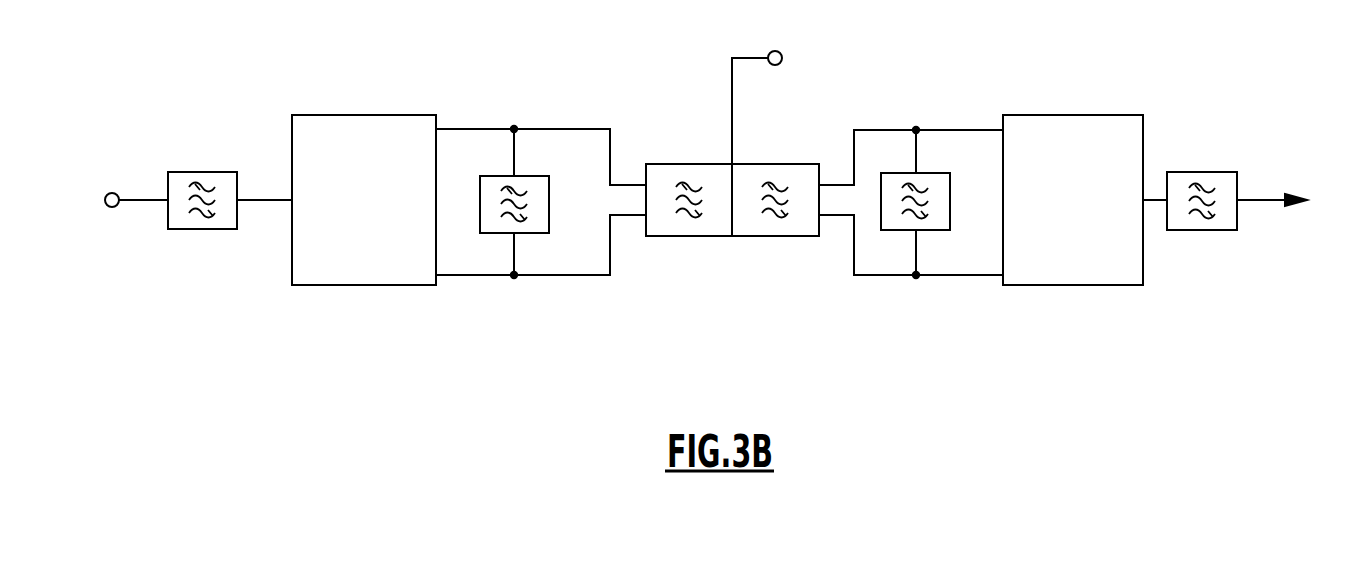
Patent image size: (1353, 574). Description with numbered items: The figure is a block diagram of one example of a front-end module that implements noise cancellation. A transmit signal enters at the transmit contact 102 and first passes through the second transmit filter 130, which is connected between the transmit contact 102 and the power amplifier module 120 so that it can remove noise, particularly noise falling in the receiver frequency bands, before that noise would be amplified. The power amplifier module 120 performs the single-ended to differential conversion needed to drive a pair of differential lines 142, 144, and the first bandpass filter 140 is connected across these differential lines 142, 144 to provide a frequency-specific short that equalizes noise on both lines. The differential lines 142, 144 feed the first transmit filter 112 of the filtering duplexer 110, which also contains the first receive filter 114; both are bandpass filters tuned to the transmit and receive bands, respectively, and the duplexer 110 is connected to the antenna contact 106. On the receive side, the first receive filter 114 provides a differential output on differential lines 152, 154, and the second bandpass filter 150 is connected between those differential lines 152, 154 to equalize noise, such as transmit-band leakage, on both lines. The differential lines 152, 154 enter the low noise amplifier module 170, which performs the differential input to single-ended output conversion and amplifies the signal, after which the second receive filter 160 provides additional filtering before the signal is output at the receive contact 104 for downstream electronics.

The transmit contact 102 is at (112, 192).
The receive contact 104 is at (1290, 193).
The antenna contact 106 is at (781, 51).
The filtering duplexer 110 is at (732, 219).
The first transmit filter 112 is at (692, 163).
The first receive filter 114 is at (758, 163).
The power amplifier module 120 is at (381, 114).
The second transmit filter 130 is at (198, 171).
The first bandpass filter 140 is at (520, 235).
The differential line 142 is at (494, 127).
The differential line 144 is at (498, 278).
The second bandpass filter 150 is at (927, 173).
The differential line 152 is at (888, 128).
The differential line 154 is at (891, 277).
The second receive filter 160 is at (1208, 172).
The low noise amplifier module 170 is at (1088, 114).